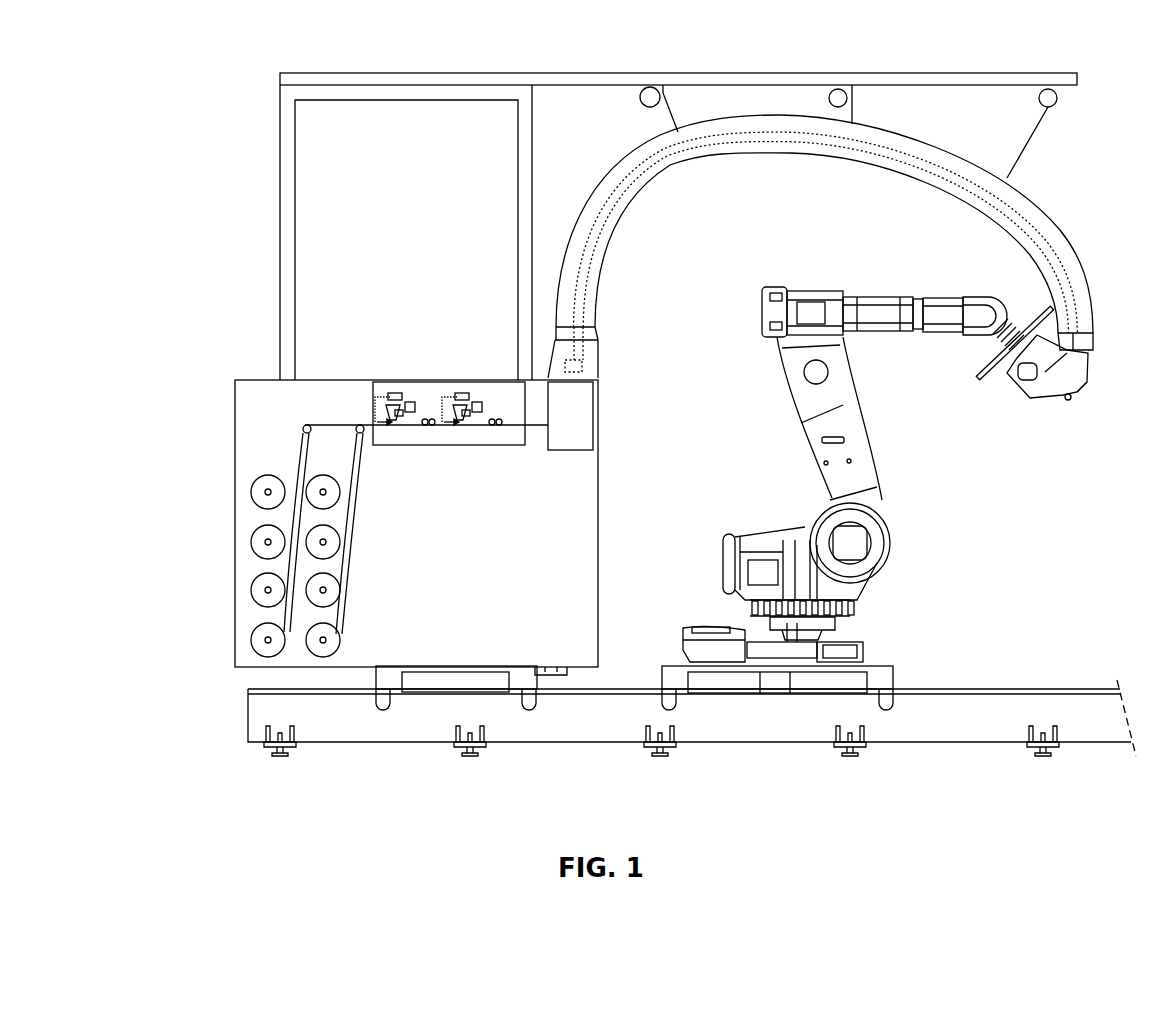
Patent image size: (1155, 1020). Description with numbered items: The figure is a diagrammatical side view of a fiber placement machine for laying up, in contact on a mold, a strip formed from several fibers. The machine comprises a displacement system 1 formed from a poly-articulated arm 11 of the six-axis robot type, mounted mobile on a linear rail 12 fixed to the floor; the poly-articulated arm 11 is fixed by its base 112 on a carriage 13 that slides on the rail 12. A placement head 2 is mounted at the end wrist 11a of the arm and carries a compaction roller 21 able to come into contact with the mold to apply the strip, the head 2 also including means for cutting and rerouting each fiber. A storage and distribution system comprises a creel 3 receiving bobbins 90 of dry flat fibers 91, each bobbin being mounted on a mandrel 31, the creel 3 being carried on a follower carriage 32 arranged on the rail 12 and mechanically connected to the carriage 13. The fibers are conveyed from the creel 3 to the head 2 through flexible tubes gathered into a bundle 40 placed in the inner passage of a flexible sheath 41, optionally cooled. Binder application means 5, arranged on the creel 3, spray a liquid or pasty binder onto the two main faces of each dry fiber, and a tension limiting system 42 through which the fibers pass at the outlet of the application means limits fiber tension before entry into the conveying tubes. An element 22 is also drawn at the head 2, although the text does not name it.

The displacement system 1 is at (858, 498).
The placement head 2 is at (1069, 400).
The creel 3 is at (421, 508).
The binder application means 5 is at (372, 392).
The poly-articulated arm 11 is at (852, 433).
The end wrist 11a is at (988, 337).
The linear rail 12 is at (1008, 742).
The carriage 13 is at (887, 675).
The compaction roller 21 is at (1070, 400).
The tool holder 22 is at (1083, 393).
The mandrel 31 is at (266, 542).
The follower carriage 32 is at (395, 682).
The bundle of flexible tubes 40 is at (1052, 242).
The flexible sheath 41 is at (1092, 277).
The tension limiting system 42 is at (593, 417).
The bobbins 90 is at (266, 492).
The flat fibers 91 is at (297, 466).
The base 112 is at (875, 623).